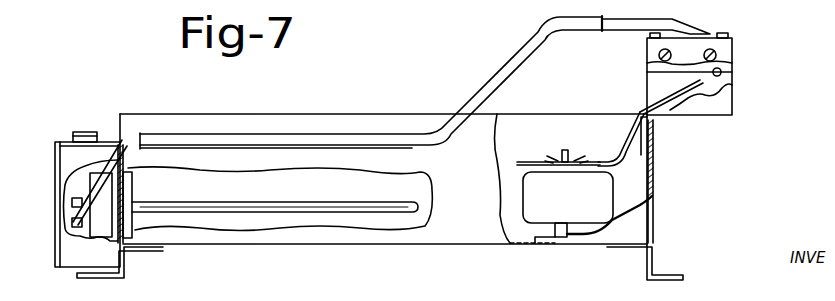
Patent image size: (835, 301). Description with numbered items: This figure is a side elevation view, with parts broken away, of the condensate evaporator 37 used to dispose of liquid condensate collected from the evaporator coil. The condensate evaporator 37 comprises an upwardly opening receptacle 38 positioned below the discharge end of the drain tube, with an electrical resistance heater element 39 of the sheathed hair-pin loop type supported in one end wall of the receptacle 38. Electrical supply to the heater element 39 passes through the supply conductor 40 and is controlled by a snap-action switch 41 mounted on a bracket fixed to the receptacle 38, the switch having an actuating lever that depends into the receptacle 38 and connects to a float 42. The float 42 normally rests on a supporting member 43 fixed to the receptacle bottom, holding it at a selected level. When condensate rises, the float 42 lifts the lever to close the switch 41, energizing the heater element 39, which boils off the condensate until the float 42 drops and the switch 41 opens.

The condensate evaporator 37 is at (238, 253).
The receptacle 38 is at (287, 248).
The electrical resistance heater element 39 is at (270, 203).
The supply conductor 40 is at (510, 48).
The snap-action switch 41 is at (728, 78).
The float 42 is at (605, 188).
The supporting member 43 is at (565, 233).